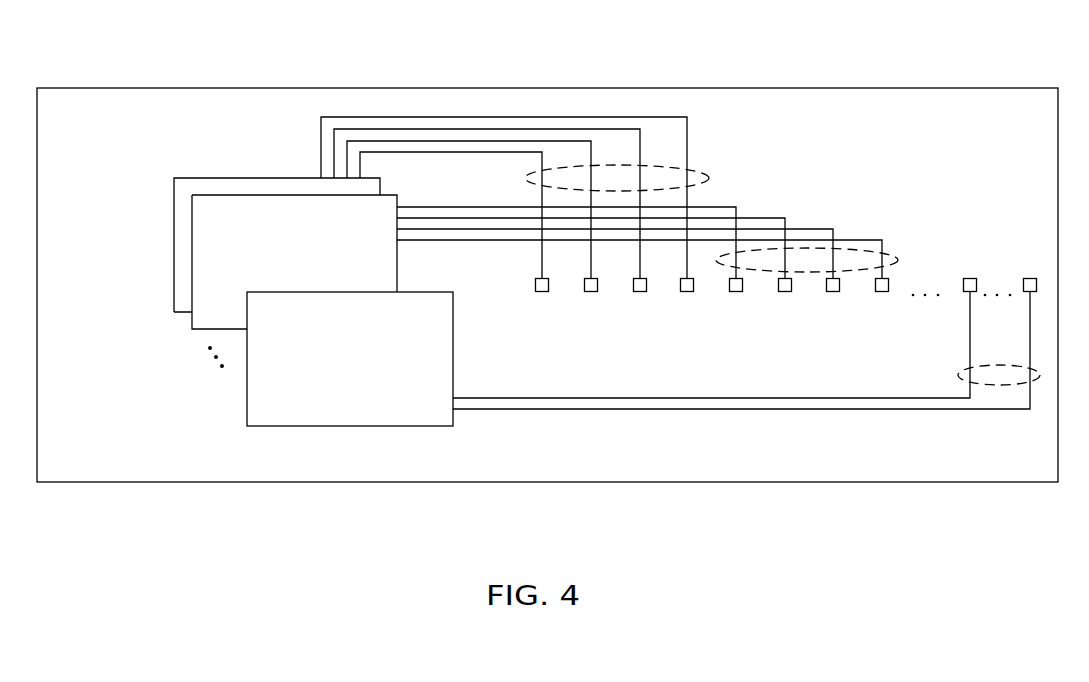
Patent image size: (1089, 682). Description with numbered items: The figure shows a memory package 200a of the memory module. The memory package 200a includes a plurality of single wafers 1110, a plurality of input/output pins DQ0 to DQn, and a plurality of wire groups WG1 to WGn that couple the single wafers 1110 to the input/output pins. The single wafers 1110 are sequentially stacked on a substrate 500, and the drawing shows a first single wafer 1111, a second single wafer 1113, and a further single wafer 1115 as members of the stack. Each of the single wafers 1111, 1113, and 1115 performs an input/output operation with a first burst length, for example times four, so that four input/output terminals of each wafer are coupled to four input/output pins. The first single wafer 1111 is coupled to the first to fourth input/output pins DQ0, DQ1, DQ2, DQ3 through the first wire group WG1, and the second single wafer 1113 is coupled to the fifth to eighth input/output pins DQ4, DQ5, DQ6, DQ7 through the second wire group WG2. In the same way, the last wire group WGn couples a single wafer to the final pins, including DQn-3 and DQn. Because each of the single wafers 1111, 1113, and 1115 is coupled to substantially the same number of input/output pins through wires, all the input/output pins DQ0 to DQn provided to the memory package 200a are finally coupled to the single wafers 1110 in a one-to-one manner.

The memory package 200a is at (586, 40).
The substrate 500 is at (884, 87).
The plurality of single wafers 1110 is at (103, 350).
The first single wafer 1111 is at (174, 306).
The second single wafer 1113 is at (190, 334).
The single wafer 1115 is at (247, 410).
The first wire group WG1 is at (693, 171).
The second wire group WG2 is at (882, 251).
The n-th wire group WGn is at (961, 373).
The first input/output pin DQ0 is at (542, 292).
The second input/output pin DQ1 is at (591, 292).
The third input/output pin DQ2 is at (640, 292).
The fourth input/output pin DQ3 is at (687, 292).
The fifth input/output pin DQ4 is at (736, 292).
The sixth input/output pin DQ5 is at (785, 292).
The seventh input/output pin DQ6 is at (833, 292).
The eighth input/output pin DQ7 is at (882, 292).
The input/output pin DQn-3 is at (970, 278).
The last input/output pin DQn is at (1030, 278).